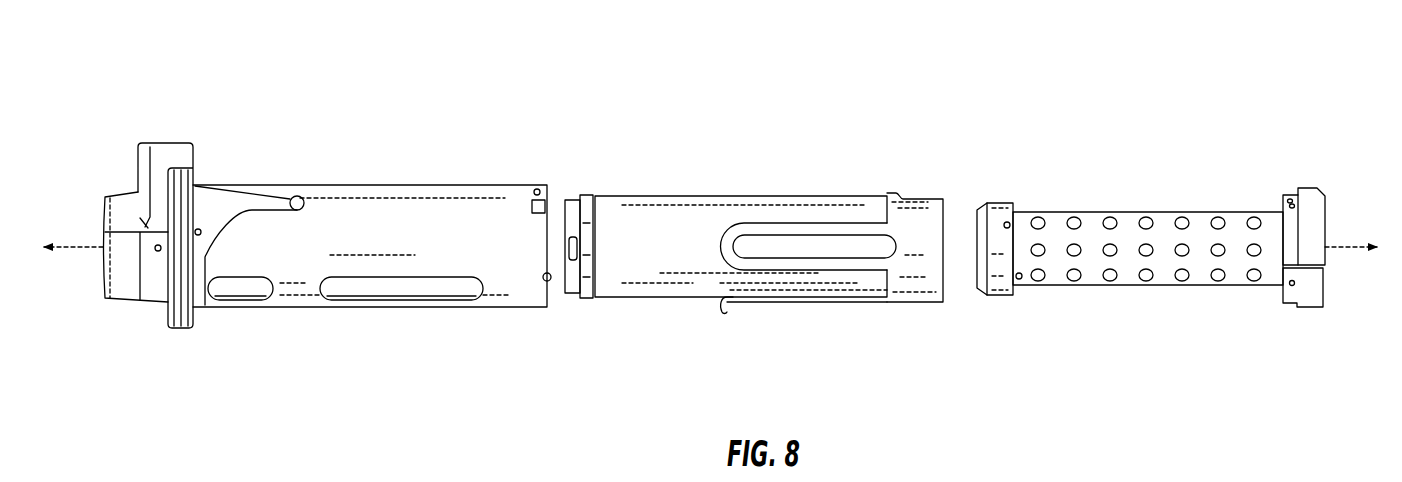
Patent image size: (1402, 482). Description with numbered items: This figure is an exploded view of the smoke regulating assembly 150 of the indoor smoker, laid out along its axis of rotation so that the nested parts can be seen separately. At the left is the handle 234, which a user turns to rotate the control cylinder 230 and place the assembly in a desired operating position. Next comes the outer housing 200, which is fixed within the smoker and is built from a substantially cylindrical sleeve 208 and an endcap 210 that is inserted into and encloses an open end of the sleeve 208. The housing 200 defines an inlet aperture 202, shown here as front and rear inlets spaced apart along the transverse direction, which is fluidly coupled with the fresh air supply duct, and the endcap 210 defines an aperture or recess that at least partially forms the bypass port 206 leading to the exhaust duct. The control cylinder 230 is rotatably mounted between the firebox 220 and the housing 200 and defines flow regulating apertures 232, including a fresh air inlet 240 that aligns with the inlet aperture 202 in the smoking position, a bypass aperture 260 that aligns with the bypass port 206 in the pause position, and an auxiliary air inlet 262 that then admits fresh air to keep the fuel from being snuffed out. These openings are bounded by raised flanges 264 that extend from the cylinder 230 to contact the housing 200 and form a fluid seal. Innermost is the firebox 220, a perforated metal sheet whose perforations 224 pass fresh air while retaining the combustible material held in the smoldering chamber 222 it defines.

The smoke regulating assembly 150 is at (130, 75).
The handle 234 is at (170, 141).
The outer housing 200 is at (347, 184).
The inlet aperture 202 is at (329, 291).
The cylindrical sleeve 208 is at (480, 213).
The control cylinder 230 is at (622, 303).
The fresh air inlet 240 is at (762, 245).
The flow regulating apertures 232 is at (841, 249).
The auxiliary air inlet 262 is at (770, 304).
The raised flanges 264 is at (727, 304).
The bypass aperture 260 is at (922, 193).
The firebox 220 is at (1128, 232).
The smoldering chamber 222 is at (1165, 240).
The perforations 224 is at (1182, 280).
The endcap 210 is at (1315, 203).
The bypass port 206 is at (1307, 286).